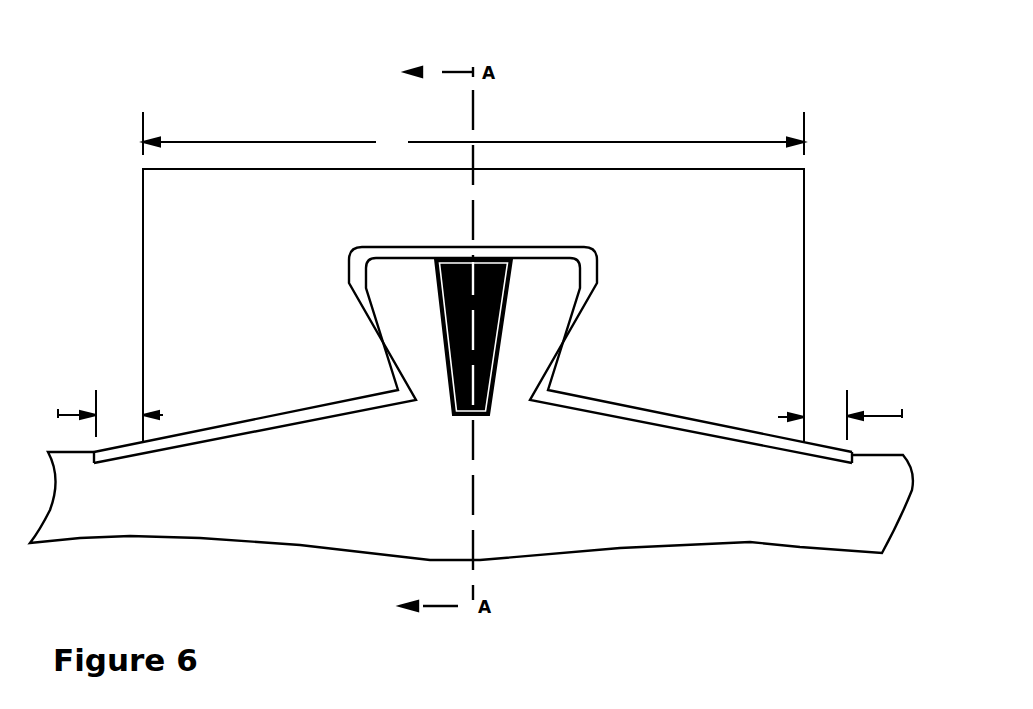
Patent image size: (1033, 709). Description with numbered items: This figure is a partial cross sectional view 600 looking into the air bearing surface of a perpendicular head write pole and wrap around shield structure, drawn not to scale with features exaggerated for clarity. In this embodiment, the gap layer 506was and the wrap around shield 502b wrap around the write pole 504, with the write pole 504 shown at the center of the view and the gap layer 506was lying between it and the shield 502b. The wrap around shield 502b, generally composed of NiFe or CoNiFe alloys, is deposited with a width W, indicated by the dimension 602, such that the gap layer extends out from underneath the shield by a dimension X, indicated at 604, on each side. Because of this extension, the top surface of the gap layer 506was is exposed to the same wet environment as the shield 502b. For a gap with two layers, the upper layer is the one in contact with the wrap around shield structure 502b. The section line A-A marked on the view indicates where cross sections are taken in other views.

The partial cross sectional view 600 is at (590, 82).
The width W of pixel region 602 is at (393, 125).
The dimension X 604 is at (903, 378).
The wrap around shield 502b is at (282, 255).
The write pole 504 is at (500, 267).
The gap layer 506was is at (592, 298).